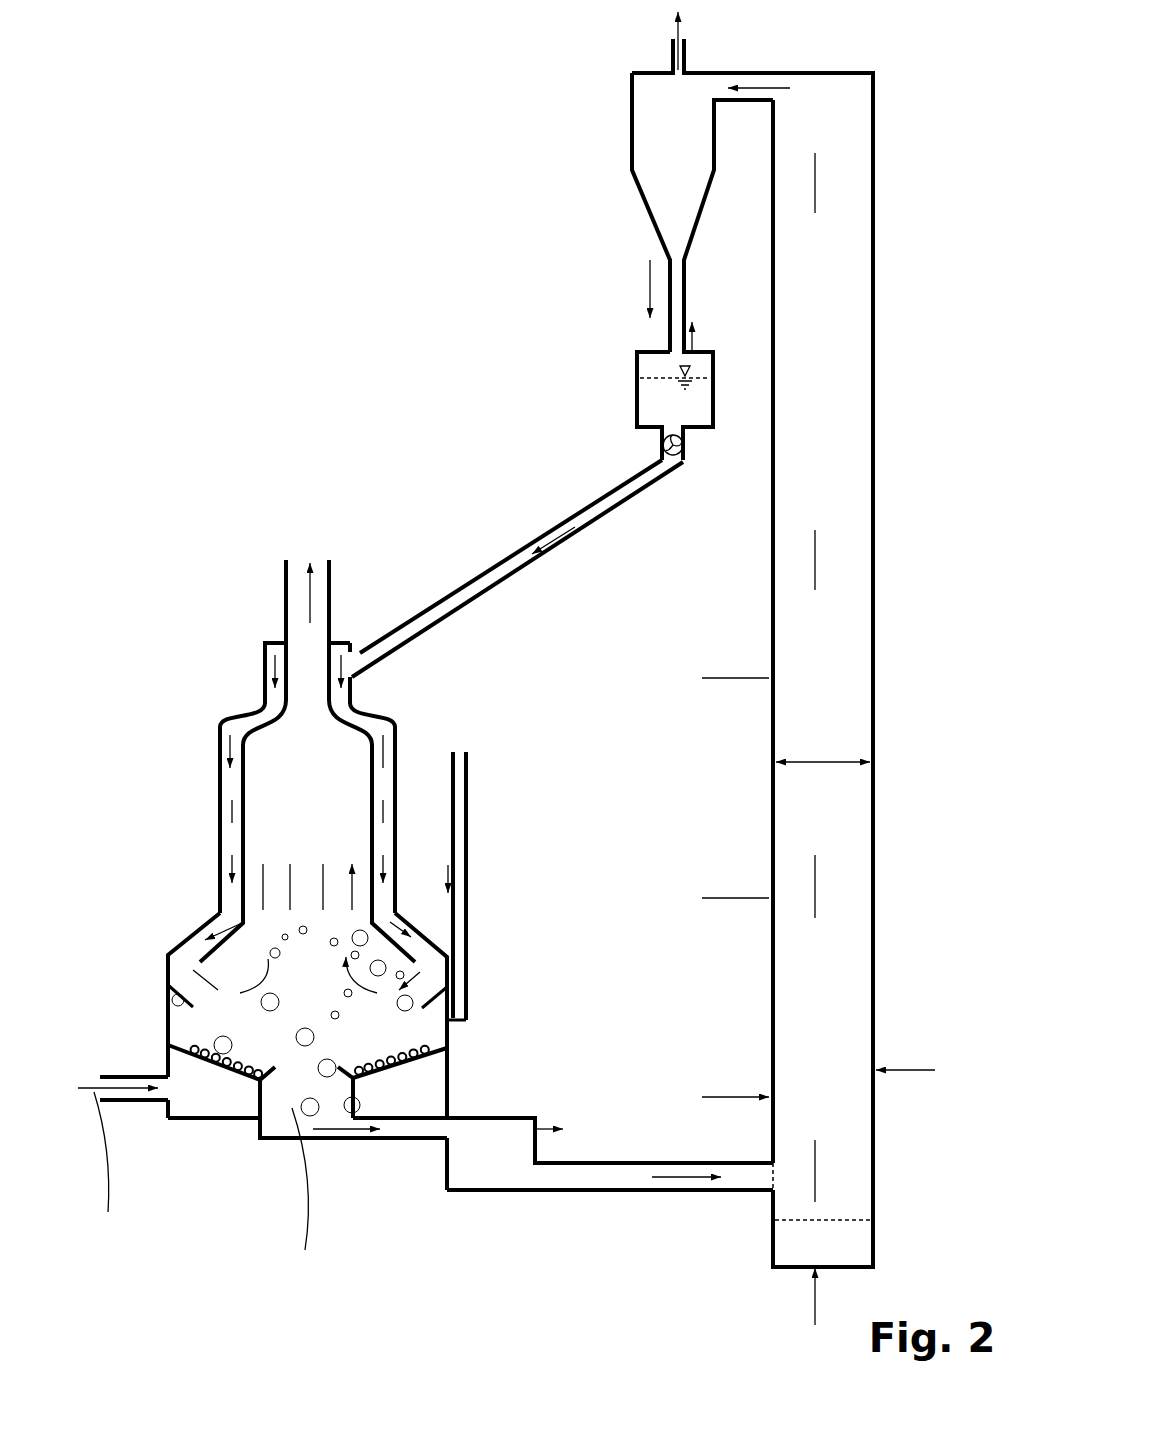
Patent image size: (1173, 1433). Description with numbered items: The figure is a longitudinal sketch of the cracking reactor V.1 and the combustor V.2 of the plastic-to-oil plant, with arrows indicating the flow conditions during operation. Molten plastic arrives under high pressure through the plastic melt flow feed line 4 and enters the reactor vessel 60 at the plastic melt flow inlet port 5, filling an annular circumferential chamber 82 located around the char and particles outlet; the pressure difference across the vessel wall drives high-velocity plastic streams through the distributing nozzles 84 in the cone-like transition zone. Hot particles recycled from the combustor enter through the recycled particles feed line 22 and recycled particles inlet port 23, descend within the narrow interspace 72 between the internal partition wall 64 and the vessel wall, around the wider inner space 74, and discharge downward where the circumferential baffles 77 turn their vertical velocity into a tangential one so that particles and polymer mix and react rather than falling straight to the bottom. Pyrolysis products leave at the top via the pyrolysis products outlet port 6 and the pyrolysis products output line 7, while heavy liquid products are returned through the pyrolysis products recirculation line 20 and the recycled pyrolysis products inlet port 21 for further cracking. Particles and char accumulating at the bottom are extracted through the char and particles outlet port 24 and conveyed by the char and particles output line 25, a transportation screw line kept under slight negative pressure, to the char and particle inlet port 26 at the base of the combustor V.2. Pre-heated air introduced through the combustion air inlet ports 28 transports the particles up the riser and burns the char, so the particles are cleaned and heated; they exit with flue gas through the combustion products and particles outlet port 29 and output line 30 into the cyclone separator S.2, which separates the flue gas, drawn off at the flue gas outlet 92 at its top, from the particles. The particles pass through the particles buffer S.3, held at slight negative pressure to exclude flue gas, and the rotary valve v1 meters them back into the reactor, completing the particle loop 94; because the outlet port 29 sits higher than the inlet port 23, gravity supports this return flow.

The plastic melt flow feed line 4 is at (118, 1101).
The plastic melt flow inlet port 5 is at (164, 1101).
The pyrolysis products outlet port 6 is at (283, 702).
The pyrolysis products output line 7 is at (284, 590).
The pyrolysis products recirculation line 20 is at (468, 843).
The recycled pyrolysis products inlet port 21 is at (456, 1024).
The recycled particles feed line 22 is at (451, 596).
The recycled particles inlet port 23 is at (358, 658).
The char and particles outlet port 24 is at (354, 1124).
The char and particles output line 25 is at (585, 1192).
The char and particle inlet port 26 is at (770, 1182).
The combustion air inlet port 28 is at (729, 900).
The combustion products and particles outlet port 29 is at (769, 82).
The combustion products and particles output line 30 is at (747, 104).
The reactor vessel 60 is at (166, 987).
The internal partition wall 64 is at (222, 776).
The interspace 72 is at (396, 727).
The inner space 74 is at (272, 823).
The circumferential baffles 77 is at (178, 990).
The circumferential chamber 82 is at (202, 1101).
The nozzles 84 is at (178, 1046).
The flue gas outlet 92 is at (671, 60).
The loop 94 is at (684, 279).
The cyclone separator S.2 is at (632, 147).
The particles buffer S.3 is at (637, 395).
The rotary valve v1 is at (663, 444).
The cracking reactor V.1 is at (169, 812).
The combustor V.2 is at (820, 682).